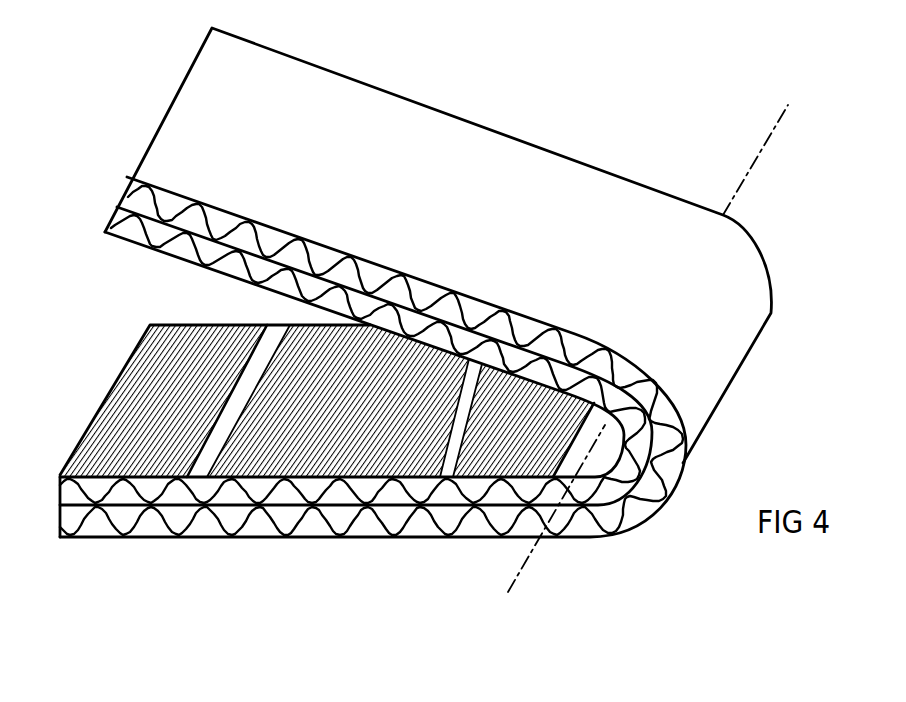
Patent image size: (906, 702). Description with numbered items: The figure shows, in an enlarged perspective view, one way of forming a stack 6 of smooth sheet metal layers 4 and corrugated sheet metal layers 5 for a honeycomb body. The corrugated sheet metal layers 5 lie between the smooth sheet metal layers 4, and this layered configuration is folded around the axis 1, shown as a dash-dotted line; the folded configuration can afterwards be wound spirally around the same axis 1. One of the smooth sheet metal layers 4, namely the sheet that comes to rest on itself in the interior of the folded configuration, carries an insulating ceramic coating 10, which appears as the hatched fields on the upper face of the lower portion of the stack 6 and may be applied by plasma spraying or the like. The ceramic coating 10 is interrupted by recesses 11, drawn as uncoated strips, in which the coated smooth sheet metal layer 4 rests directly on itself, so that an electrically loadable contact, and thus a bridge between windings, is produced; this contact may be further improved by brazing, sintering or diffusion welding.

The axis 1 is at (512, 566).
The smooth sheet metal layer 4 is at (123, 240).
The corrugated sheet metal layer 5 is at (240, 240).
The stack 6 is at (663, 507).
The ceramic coating 10 is at (117, 428).
The recess 11 is at (203, 457).